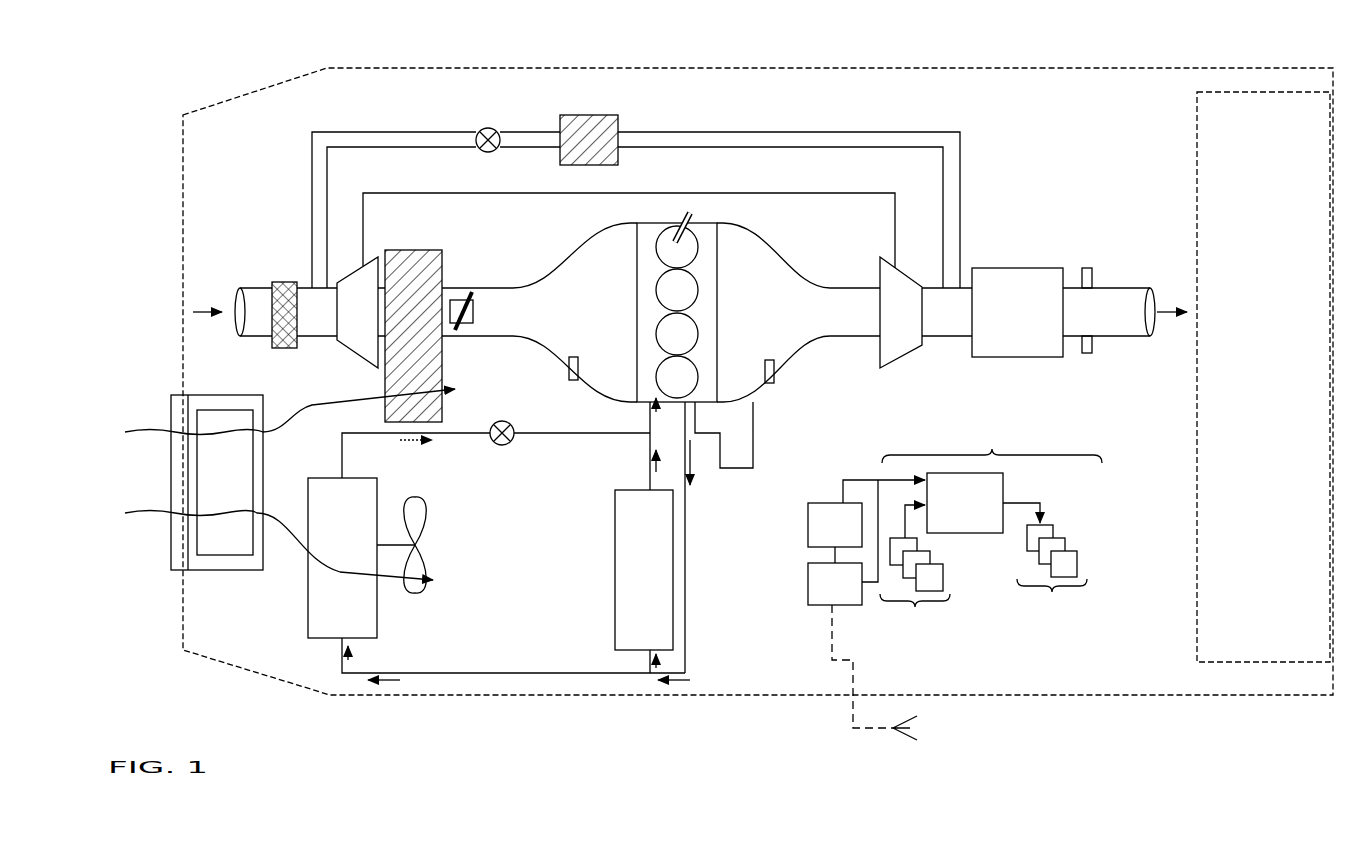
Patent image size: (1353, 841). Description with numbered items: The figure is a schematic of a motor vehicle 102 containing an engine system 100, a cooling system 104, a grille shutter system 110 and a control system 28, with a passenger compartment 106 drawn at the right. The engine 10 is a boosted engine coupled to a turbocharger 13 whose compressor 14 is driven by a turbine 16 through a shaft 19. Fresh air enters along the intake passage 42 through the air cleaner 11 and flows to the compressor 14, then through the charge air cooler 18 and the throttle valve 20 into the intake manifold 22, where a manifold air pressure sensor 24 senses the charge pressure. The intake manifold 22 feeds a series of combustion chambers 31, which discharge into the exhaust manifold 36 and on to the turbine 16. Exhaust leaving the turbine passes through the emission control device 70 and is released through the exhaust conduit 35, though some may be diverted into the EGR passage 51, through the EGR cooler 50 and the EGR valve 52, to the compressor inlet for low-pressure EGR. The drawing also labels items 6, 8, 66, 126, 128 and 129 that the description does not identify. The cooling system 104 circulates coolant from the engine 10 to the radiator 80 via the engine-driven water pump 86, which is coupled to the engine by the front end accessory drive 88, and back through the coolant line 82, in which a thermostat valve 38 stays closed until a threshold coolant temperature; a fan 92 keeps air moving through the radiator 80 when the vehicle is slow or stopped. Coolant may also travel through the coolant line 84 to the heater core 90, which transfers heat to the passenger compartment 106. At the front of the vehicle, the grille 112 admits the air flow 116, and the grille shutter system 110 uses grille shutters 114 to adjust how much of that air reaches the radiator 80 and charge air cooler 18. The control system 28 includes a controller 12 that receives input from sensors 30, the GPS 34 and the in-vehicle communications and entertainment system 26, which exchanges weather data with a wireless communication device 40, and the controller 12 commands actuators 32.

The motor vehicle 102 is at (695, 55).
The engine system 100 is at (1085, 123).
The passenger compartment 106 is at (1263, 377).
The intake system 6 is at (255, 207).
The exhaust system 8 is at (1140, 203).
The cooling system 104 is at (720, 606).
The intake passage 42 is at (263, 337).
The air cleaner 11 is at (282, 282).
The EGR passage 51 is at (712, 131).
The EGR valve 52 is at (496, 130).
The EGR cooler 50 is at (598, 115).
The shaft 19 is at (810, 195).
The turbocharger 13 is at (418, 228).
The compressor 14 is at (367, 321).
The charge air cooler 18 is at (442, 252).
The throttle valve 20 is at (480, 306).
The intake manifold 22 is at (605, 321).
The manifold air pressure sensor 24 is at (566, 358).
The engine 10 is at (717, 295).
The combustion chambers 31 is at (697, 244).
The fuel injector 66 is at (692, 213).
The exhaust manifold 36 is at (785, 321).
The exhaust gas sensor 126 is at (774, 366).
The turbine 16 is at (912, 321).
The emission control device 70 is at (1014, 258).
The exhaust conduit 35 is at (1136, 288).
The exhaust sensor 129 is at (1087, 268).
The exhaust sensor 128 is at (1087, 353).
The grille shutter system 110 is at (217, 583).
The grille shutters 114 is at (240, 492).
The grille 112 is at (160, 560).
The air flow 116 is at (138, 423).
The radiator 80 is at (342, 558).
The fan 92 is at (433, 525).
The coolant line 82 is at (516, 546).
The thermostat valve 38 is at (500, 457).
The heater core 90 is at (644, 570).
The coolant line 84 is at (660, 535).
The engine-driven water pump 86 is at (765, 455).
The front end accessory drive 88 is at (765, 410).
The control system 28 is at (992, 436).
The controller 12 is at (975, 512).
The GPS 34 is at (845, 534).
The in-vehicle communications and entertainment system 26 is at (845, 594).
The sensors 30 is at (915, 577).
The actuators 32 is at (1051, 569).
The wireless communication device 40 is at (912, 742).